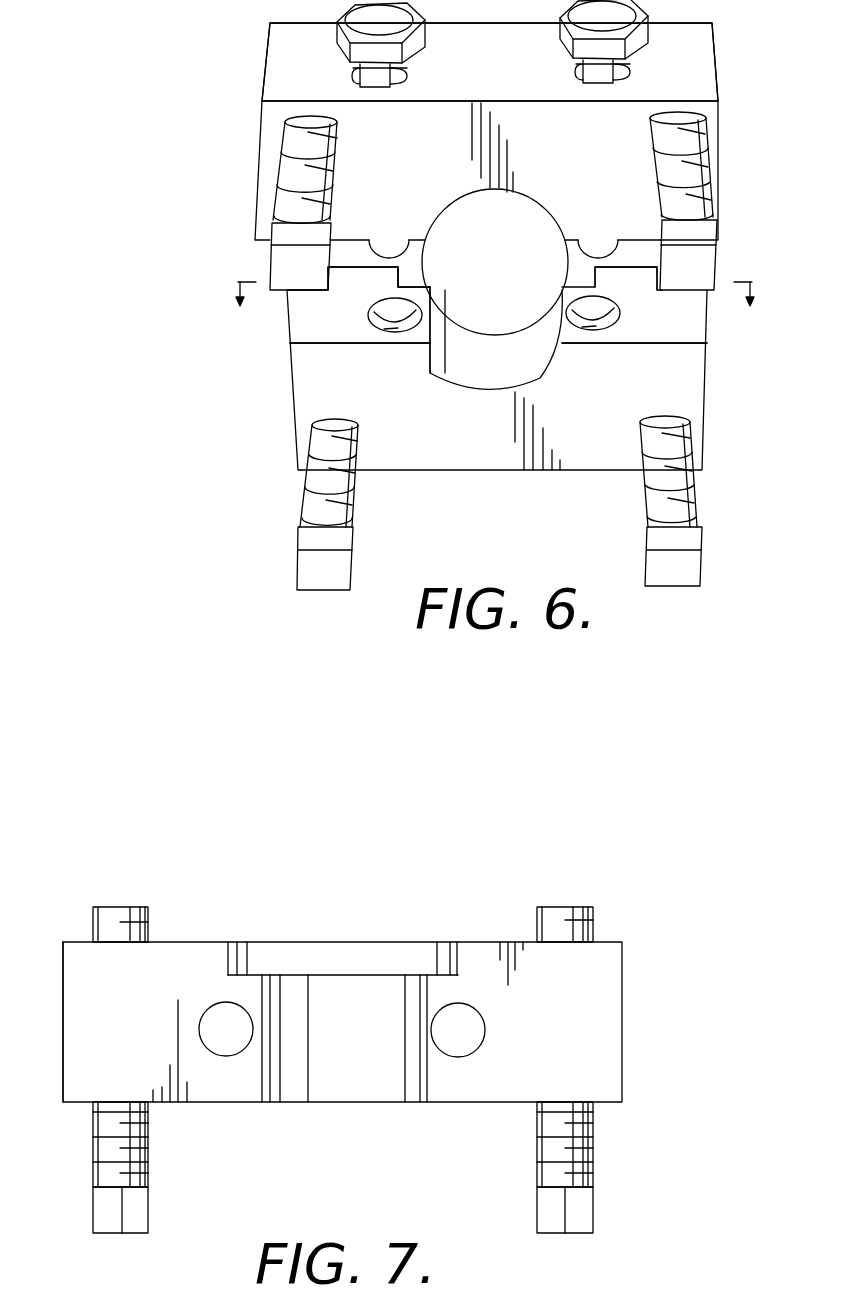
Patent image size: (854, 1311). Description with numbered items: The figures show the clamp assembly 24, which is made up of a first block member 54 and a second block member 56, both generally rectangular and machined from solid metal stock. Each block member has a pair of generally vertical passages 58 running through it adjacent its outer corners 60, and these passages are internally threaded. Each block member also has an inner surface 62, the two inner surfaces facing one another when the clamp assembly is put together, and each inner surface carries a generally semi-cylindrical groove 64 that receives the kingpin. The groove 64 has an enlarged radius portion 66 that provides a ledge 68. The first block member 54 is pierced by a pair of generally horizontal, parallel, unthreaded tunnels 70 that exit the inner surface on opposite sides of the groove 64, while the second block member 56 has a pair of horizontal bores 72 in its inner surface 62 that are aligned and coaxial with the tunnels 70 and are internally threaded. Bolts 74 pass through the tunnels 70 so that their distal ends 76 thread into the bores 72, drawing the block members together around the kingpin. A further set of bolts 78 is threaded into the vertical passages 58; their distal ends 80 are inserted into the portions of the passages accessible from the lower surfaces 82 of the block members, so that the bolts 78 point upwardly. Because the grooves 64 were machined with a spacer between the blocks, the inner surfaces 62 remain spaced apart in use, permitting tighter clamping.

In FIG. 6, the clamp assembly 24 is at (240, 172).
In FIG. 6, the first block member 54 is at (268, 72).
In FIG. 6, the second block member 56 is at (292, 392).
In FIG. 7, the second block member 56 is at (612, 1000).
In FIG. 6, the vertical passages 58 is at (322, 122).
In FIG. 6, the outer corners 60 is at (716, 46).
In FIG. 6, the inner surface 62 is at (327, 337).
In FIG. 7, the inner surface 62 is at (70, 1022).
In FIG. 6, the semi-cylindrical groove 64 is at (446, 202).
In FIG. 7, the semi-cylindrical groove 64 is at (421, 1087).
In FIG. 6, the enlarged radius portion 66 is at (404, 283).
In FIG. 7, the enlarged radius portion 66 is at (453, 960).
In FIG. 6, the ledge 68 is at (428, 280).
In FIG. 7, the ledge 68 is at (252, 975).
In FIG. 6, the horizontal tunnels 70 is at (572, 76).
In FIG. 6, the horizontal bores 72 is at (385, 306).
In FIG. 7, the horizontal bores 72 is at (213, 1012).
In FIG. 6, the bolts 74 is at (376, 247).
In FIG. 6, the distal ends 76 is at (586, 250).
In FIG. 6, the bolts 78 is at (312, 507).
In FIG. 7, the bolts 78 is at (143, 1212).
In FIG. 7, the distal ends 80 is at (125, 907).
In FIG. 6, the lower surfaces 82 is at (712, 125).
In FIG. 7, the lower surfaces 82 is at (222, 1103).